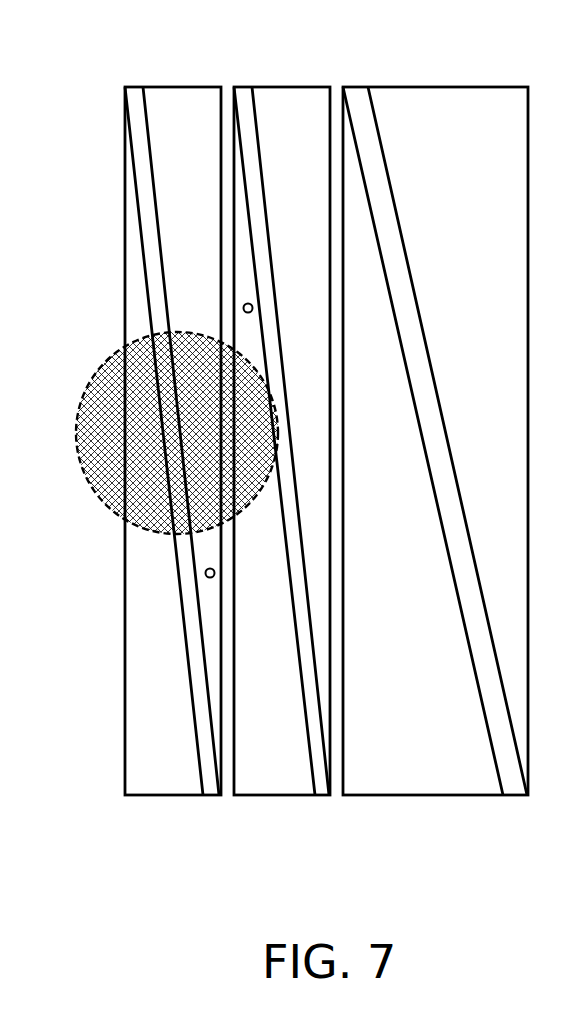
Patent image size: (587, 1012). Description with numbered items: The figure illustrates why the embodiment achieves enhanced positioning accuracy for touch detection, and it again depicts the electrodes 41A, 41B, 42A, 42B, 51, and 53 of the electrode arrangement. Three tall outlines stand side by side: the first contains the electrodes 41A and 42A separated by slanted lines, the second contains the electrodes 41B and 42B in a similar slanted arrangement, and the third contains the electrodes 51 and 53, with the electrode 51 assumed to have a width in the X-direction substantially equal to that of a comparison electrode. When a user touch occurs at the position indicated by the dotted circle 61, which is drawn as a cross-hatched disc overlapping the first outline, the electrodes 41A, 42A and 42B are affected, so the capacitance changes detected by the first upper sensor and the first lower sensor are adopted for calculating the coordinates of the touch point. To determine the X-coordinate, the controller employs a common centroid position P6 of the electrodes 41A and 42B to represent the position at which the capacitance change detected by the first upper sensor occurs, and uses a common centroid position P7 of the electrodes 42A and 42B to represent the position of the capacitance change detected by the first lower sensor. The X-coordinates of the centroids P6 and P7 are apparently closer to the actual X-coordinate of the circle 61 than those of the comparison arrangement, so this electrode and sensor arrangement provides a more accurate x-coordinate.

The electrode 41A is at (183, 102).
The electrode 42A is at (157, 782).
The electrode 41B is at (295, 98).
The electrode 42B is at (270, 782).
The electrode 51 is at (423, 102).
The electrode 53 is at (402, 782).
The dotted circle 61 is at (107, 462).
The common centroid position P6 is at (244, 306).
The common centroid position P7 is at (206, 577).